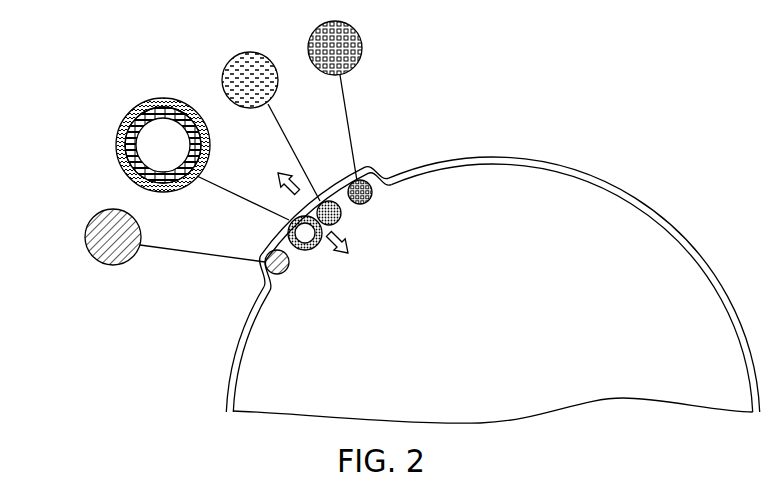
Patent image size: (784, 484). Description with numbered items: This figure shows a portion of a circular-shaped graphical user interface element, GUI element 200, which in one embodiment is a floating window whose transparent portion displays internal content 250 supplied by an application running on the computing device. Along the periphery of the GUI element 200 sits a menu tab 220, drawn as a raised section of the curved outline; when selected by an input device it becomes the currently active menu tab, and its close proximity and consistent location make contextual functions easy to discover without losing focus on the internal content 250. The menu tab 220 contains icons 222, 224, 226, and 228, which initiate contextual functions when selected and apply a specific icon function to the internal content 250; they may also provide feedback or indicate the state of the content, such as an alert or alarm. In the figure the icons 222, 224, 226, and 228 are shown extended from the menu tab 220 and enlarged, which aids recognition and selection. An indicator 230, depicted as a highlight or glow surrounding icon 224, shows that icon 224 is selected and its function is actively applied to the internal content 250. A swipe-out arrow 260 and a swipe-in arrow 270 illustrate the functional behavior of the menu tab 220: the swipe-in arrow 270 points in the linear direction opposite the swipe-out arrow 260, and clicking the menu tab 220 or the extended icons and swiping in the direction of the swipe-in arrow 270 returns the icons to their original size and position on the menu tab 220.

The GUI element 200 is at (662, 217).
The internal content 250 is at (575, 205).
The menu tab 220 is at (381, 172).
The icon 222 is at (86, 237).
The icon 224 is at (160, 130).
The icon 226 is at (281, 118).
The icon 228 is at (362, 36).
The indicator 230 is at (116, 153).
The swipe-out arrow 260 is at (286, 171).
The swipe-in arrow 270 is at (352, 242).